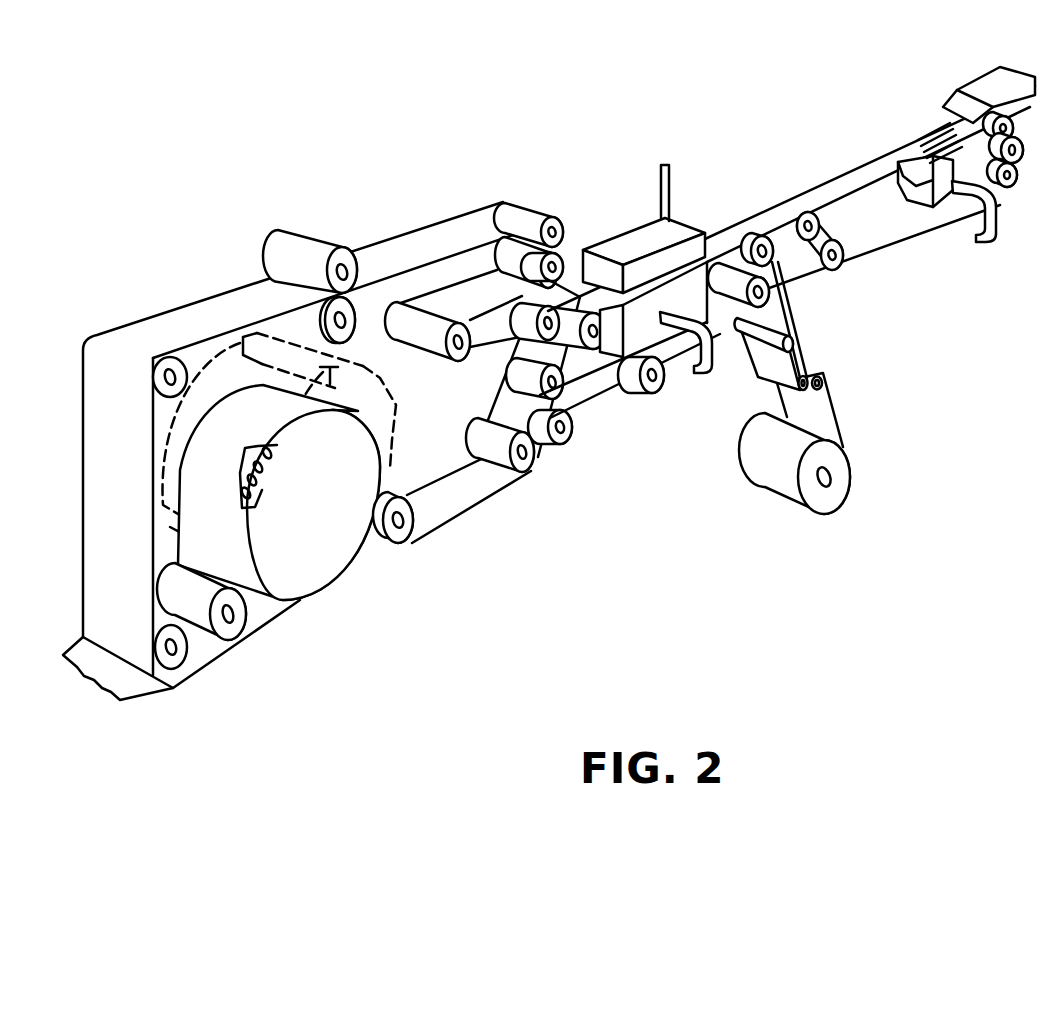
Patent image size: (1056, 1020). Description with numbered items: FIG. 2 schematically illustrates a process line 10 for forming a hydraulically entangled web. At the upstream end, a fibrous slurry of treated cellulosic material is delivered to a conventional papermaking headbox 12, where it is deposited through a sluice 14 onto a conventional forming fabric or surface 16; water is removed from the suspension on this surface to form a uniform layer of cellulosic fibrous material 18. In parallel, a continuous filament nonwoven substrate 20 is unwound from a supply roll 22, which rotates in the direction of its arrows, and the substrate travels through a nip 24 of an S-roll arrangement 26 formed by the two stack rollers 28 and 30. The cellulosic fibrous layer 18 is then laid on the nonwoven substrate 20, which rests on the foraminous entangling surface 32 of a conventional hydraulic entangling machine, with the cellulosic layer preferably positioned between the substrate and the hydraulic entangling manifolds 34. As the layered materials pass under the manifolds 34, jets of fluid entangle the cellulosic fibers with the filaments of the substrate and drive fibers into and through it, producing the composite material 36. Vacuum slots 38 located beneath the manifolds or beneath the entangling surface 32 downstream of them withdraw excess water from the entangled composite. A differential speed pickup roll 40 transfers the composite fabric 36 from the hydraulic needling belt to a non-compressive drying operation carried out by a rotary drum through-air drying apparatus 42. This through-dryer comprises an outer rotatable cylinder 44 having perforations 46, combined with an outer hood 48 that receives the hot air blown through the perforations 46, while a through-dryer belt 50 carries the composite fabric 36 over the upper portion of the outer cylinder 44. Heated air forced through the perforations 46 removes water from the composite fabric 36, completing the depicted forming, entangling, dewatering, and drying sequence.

The apparatus 10 is at (950, 390).
The papermaking headbox 12 is at (985, 84).
The sluice 14 is at (923, 126).
The forming fabric 16 is at (916, 238).
The layer of cellulosic fibrous material 18 is at (858, 172).
The nonwoven substrate 20 is at (785, 300).
The supply roll 22 is at (787, 487).
The nip 24 is at (821, 377).
The S-roll arrangement 26 is at (766, 390).
The stack roller 28 is at (824, 388).
The stack roller 30 is at (801, 377).
The foraminous entangling surface 32 is at (607, 382).
The hydraulic entangling manifolds 34 is at (642, 233).
The composite material 36 is at (575, 305).
The vacuum slots 38 is at (631, 339).
The differential speed pickup roll 40 is at (545, 456).
The through-air drying apparatus 42 is at (407, 621).
The outer rotatable cylinder 44 is at (316, 596).
The perforations 46 is at (277, 463).
The outer hood 48 is at (385, 398).
The through-dryer belt 50 is at (443, 531).